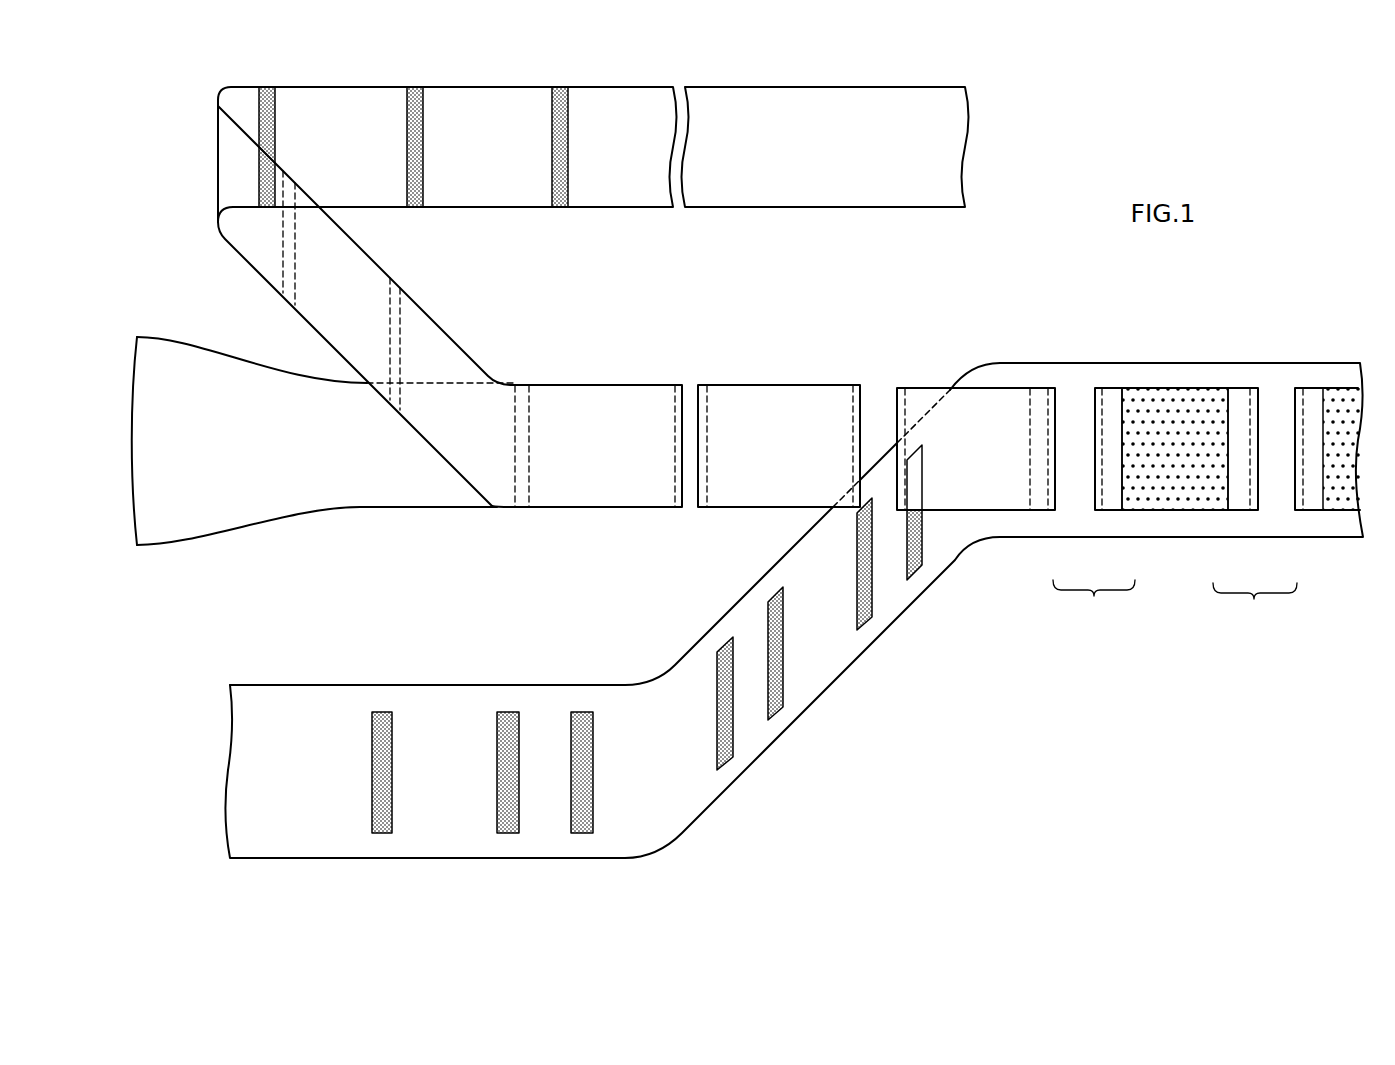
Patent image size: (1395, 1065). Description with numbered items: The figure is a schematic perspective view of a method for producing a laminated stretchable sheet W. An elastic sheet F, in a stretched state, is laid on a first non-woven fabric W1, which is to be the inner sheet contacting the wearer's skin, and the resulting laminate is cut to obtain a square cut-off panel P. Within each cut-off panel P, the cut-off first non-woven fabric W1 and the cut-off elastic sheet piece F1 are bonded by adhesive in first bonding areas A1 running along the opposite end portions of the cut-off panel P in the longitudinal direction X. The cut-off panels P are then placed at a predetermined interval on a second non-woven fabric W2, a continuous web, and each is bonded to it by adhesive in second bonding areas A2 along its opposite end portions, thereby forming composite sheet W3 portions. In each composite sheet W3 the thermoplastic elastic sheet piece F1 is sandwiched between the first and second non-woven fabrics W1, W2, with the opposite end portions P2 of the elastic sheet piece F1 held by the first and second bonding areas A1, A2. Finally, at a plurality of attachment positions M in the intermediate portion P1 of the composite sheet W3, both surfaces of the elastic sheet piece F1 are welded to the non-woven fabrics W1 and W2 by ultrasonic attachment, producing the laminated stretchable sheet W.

The first non-woven fabric W1 is at (870, 105).
The second non-woven fabric W2 is at (293, 700).
The composite sheet W3 is at (1010, 513).
The laminated stretchable sheet W is at (1315, 377).
The first bonding areas A1 is at (272, 87).
The second bonding areas A2 is at (383, 713).
The elastic sheet F is at (182, 350).
The cut-off elastic sheet piece F1 is at (737, 398).
The cut-off panel P is at (787, 407).
The intermediate portion P1 is at (1180, 510).
The opposite end portions P2 is at (1175, 607).
The attachment positions M is at (1202, 393).
The longitudinal direction X is at (578, 58).